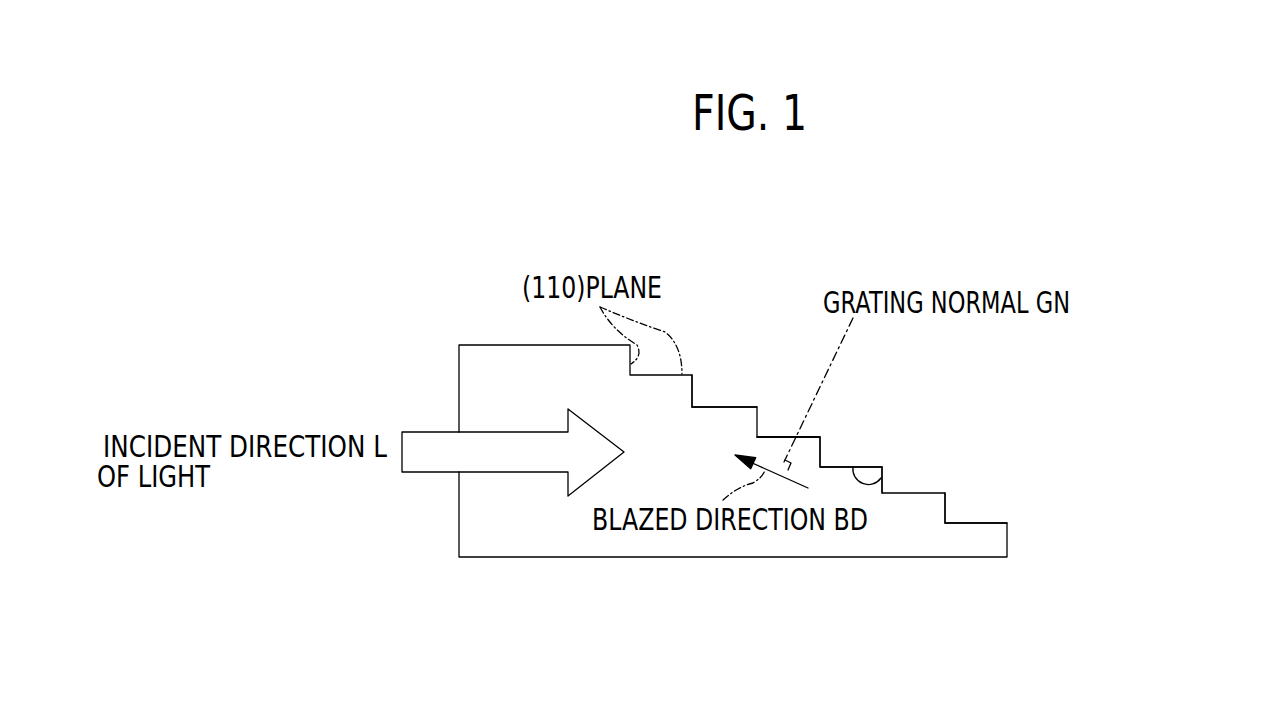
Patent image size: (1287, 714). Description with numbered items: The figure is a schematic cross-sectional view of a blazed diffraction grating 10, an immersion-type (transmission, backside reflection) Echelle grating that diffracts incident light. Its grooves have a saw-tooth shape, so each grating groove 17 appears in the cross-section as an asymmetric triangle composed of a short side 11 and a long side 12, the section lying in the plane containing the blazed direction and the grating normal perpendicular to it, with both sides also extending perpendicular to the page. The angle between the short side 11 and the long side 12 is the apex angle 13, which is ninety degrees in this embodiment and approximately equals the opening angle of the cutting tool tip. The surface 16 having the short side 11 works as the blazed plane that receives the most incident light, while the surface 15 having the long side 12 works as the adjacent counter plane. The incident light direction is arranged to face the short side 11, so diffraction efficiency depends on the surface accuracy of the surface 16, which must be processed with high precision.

The blazed diffraction grating 10 is at (494, 310).
The short side 11 is at (883, 486).
The long side 12 is at (771, 436).
The apex angle 13 is at (853, 465).
The surface having the long side 15 is at (994, 521).
The surface having the short side 16 is at (694, 391).
The grating groove 17 is at (822, 452).